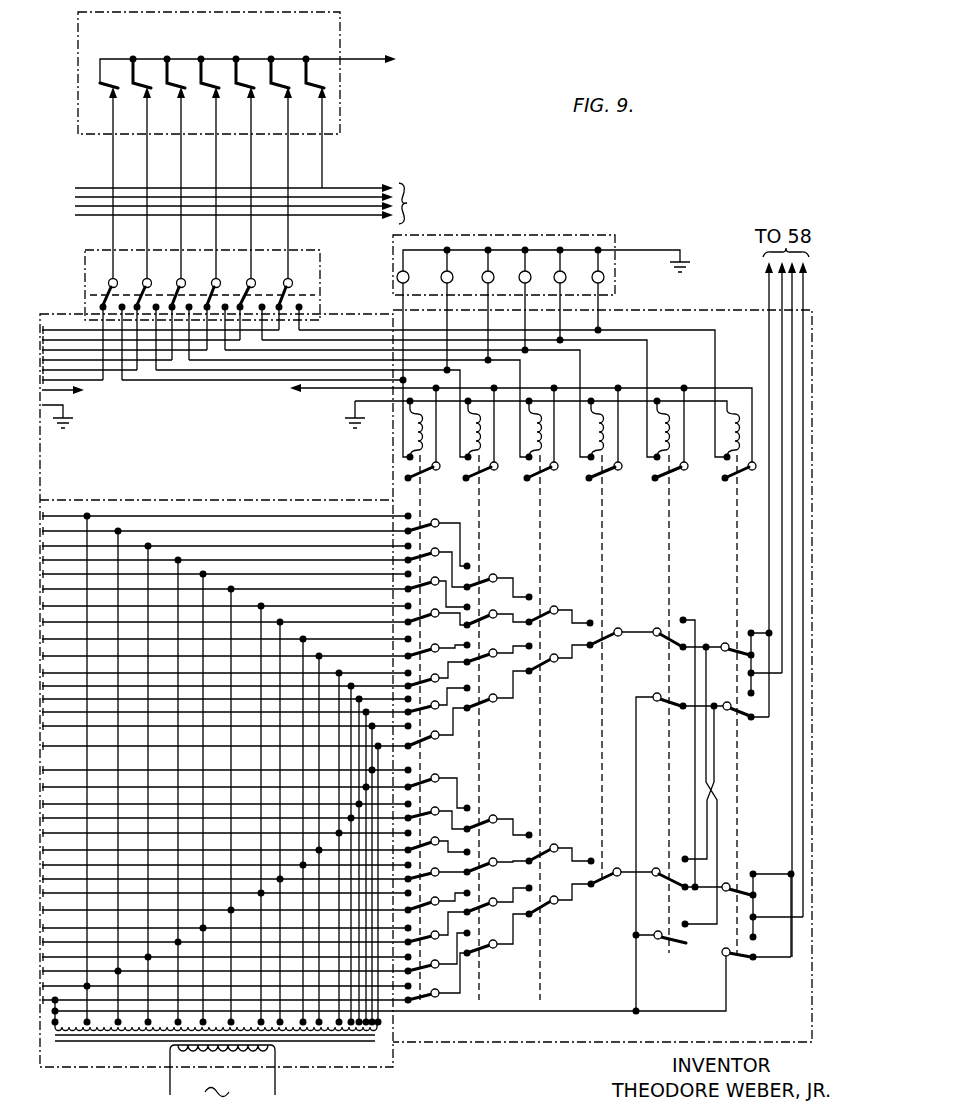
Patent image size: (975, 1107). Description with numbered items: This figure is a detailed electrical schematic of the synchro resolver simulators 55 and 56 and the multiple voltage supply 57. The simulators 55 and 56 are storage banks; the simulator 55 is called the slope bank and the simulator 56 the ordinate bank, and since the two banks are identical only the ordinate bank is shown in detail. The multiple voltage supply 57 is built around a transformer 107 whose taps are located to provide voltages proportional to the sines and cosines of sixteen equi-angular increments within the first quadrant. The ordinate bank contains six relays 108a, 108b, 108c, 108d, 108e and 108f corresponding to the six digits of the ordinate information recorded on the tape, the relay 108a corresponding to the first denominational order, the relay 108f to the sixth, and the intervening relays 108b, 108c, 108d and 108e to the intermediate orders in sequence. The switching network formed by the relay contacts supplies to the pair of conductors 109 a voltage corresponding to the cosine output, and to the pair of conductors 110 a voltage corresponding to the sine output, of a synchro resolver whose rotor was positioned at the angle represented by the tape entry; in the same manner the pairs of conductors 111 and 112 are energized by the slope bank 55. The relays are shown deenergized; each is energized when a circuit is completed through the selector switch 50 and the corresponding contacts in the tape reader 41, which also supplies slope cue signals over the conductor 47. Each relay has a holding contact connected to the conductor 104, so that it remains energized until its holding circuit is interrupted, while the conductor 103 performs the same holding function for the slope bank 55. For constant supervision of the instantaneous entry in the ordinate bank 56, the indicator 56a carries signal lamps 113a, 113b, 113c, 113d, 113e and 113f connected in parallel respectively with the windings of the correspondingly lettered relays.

The tape reader 41 is at (78, 52).
The conductor 47 is at (323, 142).
The pair of conductors 112 is at (306, 189).
The pair of conductors 111 is at (314, 216).
The selector switch 50 is at (102, 255).
The synchro resolver simulator 55 is at (39, 319).
The conductor 103 is at (71, 392).
The conductor 104 is at (323, 390).
The indicator 56a is at (519, 290).
The signal lamp 113a is at (397, 278).
The signal lamp 113b is at (441, 287).
The signal lamp 113c is at (482, 287).
The signal lamp 113d is at (520, 287).
The signal lamp 113e is at (556, 287).
The signal lamp 113f is at (594, 287).
The synchro resolver simulator 56 is at (663, 306).
The relay 108a is at (436, 480).
The relay 108b is at (493, 480).
The relay 108c is at (553, 480).
The relay 108d is at (616, 480).
The relay 108e is at (677, 480).
The relay 108f is at (746, 480).
The pair of conductors 109 is at (765, 290).
The pair of conductors 110 is at (786, 281).
The multiple voltage supply 57 is at (100, 1068).
The transformer 107 is at (287, 1071).